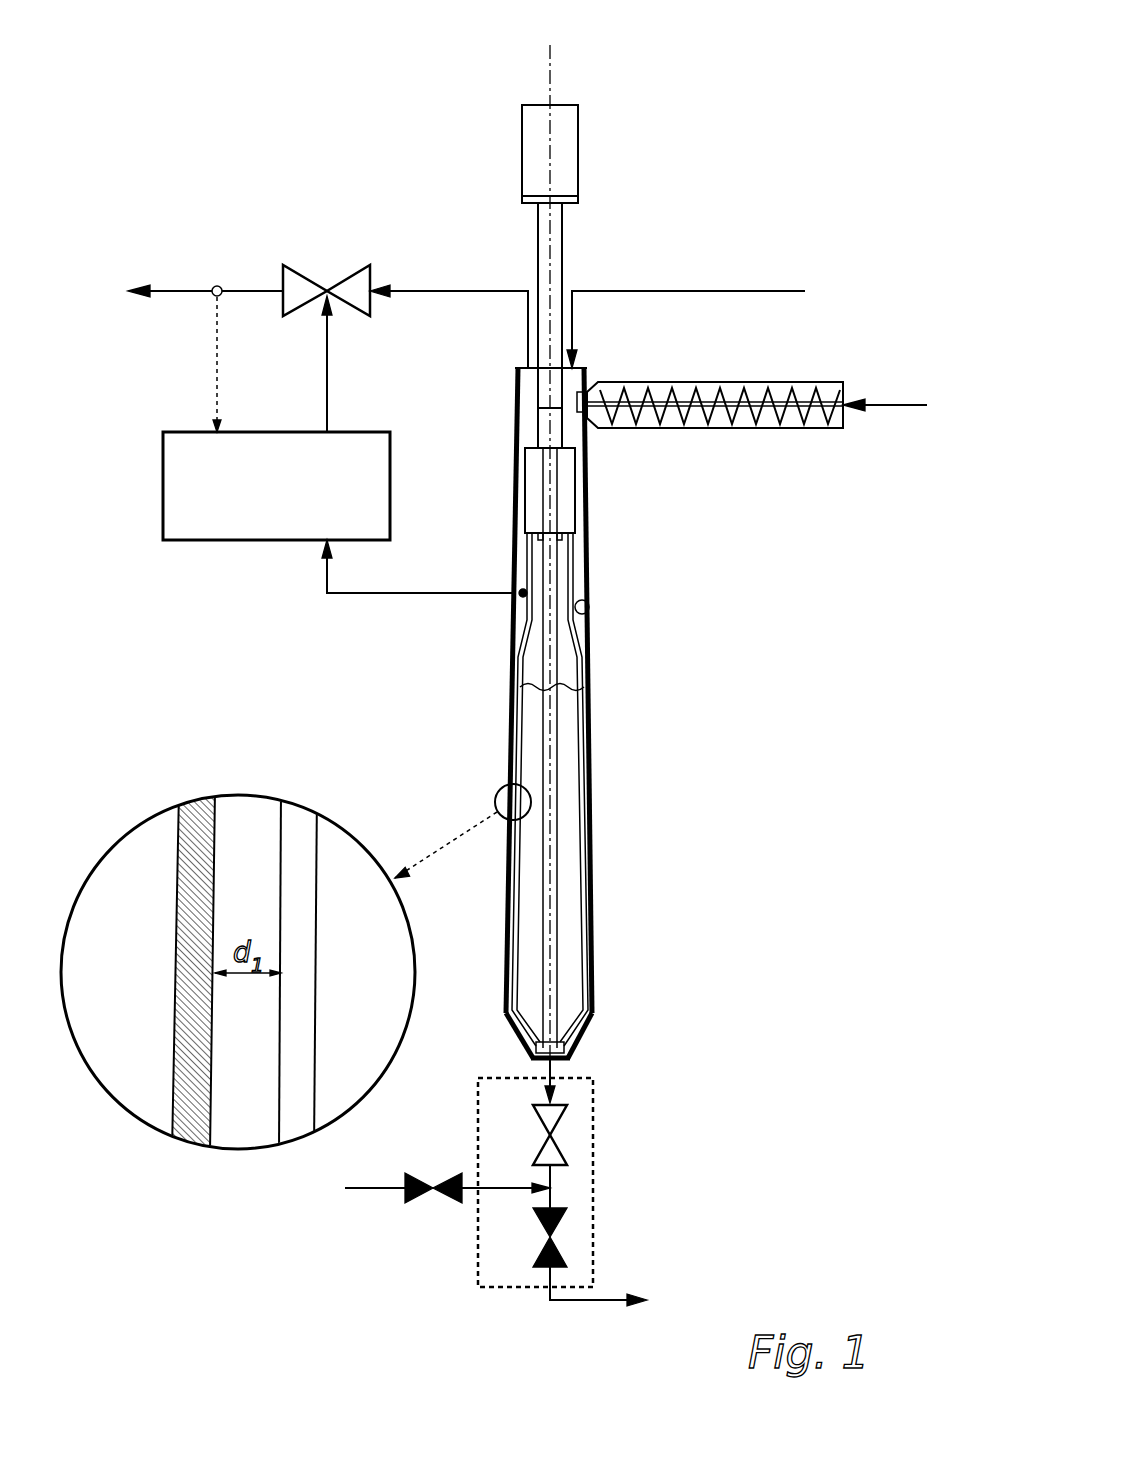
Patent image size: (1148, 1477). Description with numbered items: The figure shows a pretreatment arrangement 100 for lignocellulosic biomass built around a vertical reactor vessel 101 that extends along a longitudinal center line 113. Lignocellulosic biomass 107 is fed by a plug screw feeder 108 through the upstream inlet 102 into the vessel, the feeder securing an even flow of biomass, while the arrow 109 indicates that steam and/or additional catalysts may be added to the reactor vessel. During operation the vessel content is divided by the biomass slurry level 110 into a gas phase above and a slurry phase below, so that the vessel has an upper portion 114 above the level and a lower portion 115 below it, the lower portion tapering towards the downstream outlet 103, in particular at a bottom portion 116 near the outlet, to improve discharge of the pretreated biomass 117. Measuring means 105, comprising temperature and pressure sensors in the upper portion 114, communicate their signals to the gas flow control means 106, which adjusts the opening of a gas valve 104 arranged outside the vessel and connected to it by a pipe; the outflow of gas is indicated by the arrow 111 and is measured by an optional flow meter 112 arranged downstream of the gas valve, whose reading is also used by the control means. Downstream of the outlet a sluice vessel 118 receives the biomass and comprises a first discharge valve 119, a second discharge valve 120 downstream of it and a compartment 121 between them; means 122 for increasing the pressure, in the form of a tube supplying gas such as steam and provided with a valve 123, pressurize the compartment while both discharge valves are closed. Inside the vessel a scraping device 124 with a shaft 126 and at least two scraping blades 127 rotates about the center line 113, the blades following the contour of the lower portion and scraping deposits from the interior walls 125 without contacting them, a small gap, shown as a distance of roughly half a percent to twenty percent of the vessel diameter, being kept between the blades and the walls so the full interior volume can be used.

The pretreatment arrangement 100 is at (770, 85).
The reactor vessel 101 is at (594, 716).
The inlet 102 is at (602, 371).
The outlet 103 is at (591, 986).
The gas valve 104 is at (300, 270).
The measuring means 105 is at (515, 596).
The gas flow control means 106 is at (208, 540).
The lignocellulosic biomass 107 is at (885, 403).
The plug screw feeder 108 is at (802, 366).
The arrow 109 is at (733, 290).
The biomass slurry level 110 is at (566, 688).
The arrow 111 is at (482, 290).
The flow meter 112 is at (217, 286).
The longitudinal center line 113 is at (553, 78).
The upper portion 114 is at (515, 492).
The lower portion 115 is at (512, 1025).
The bottom portion 116 is at (610, 1020).
The biomass 117 is at (520, 1069).
The sluice vessel 118 is at (593, 1178).
The first discharge valve 119 is at (563, 1150).
The second discharge valve 120 is at (563, 1250).
The compartment 121 is at (550, 1195).
The means for increasing the pressure 122 is at (490, 1188).
The valve 123 is at (418, 1203).
The scraping device 124 is at (567, 475).
The interior walls 125 is at (588, 622).
The shaft 126 is at (564, 262).
The scraping blades 127 is at (527, 565).